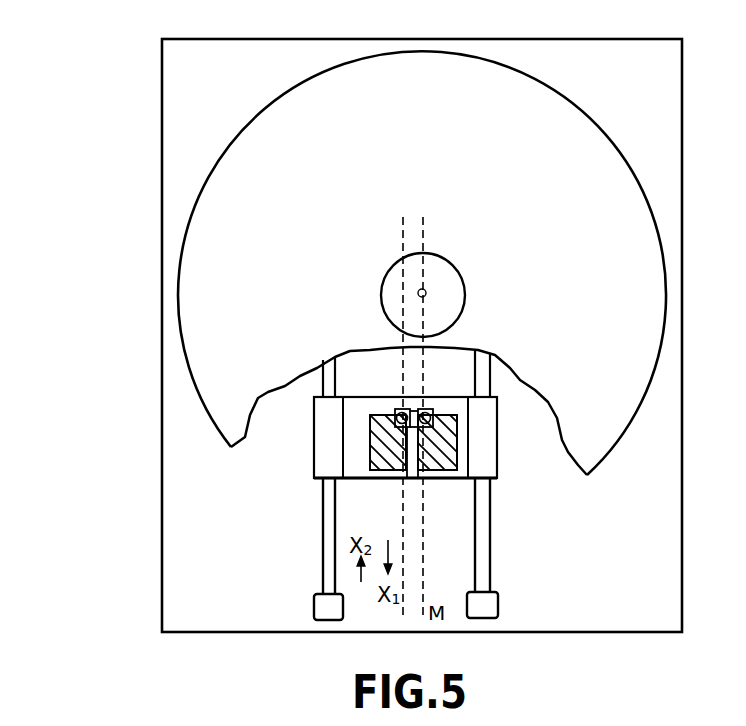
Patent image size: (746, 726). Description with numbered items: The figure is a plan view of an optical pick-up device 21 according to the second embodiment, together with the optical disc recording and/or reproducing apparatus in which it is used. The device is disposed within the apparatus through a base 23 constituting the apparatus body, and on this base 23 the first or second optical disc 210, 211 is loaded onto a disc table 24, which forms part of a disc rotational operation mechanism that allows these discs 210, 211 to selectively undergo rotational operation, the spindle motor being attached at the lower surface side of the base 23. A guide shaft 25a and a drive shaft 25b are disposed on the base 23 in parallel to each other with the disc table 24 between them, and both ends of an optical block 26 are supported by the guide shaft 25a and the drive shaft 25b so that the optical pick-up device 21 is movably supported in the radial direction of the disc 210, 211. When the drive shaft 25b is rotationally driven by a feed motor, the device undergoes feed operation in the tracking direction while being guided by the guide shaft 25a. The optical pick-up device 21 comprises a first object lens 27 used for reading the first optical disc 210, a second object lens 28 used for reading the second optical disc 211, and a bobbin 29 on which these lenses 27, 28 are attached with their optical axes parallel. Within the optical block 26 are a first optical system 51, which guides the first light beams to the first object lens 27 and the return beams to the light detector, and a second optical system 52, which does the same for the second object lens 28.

The first optical disc 210 is at (187, 285).
The second optical disc 211 is at (347, 263).
The base 23 is at (182, 562).
The disc table 24 is at (388, 283).
The optical pick-up device 21 is at (294, 497).
The optical block 26 is at (333, 453).
The first object lens 27 is at (400, 410).
The second object lens 28 is at (425, 410).
The bobbin 29 is at (432, 419).
The first optical system 51 is at (383, 463).
The second optical system 52 is at (438, 462).
The guide shaft 25a is at (482, 547).
The drive shaft 25b is at (325, 545).